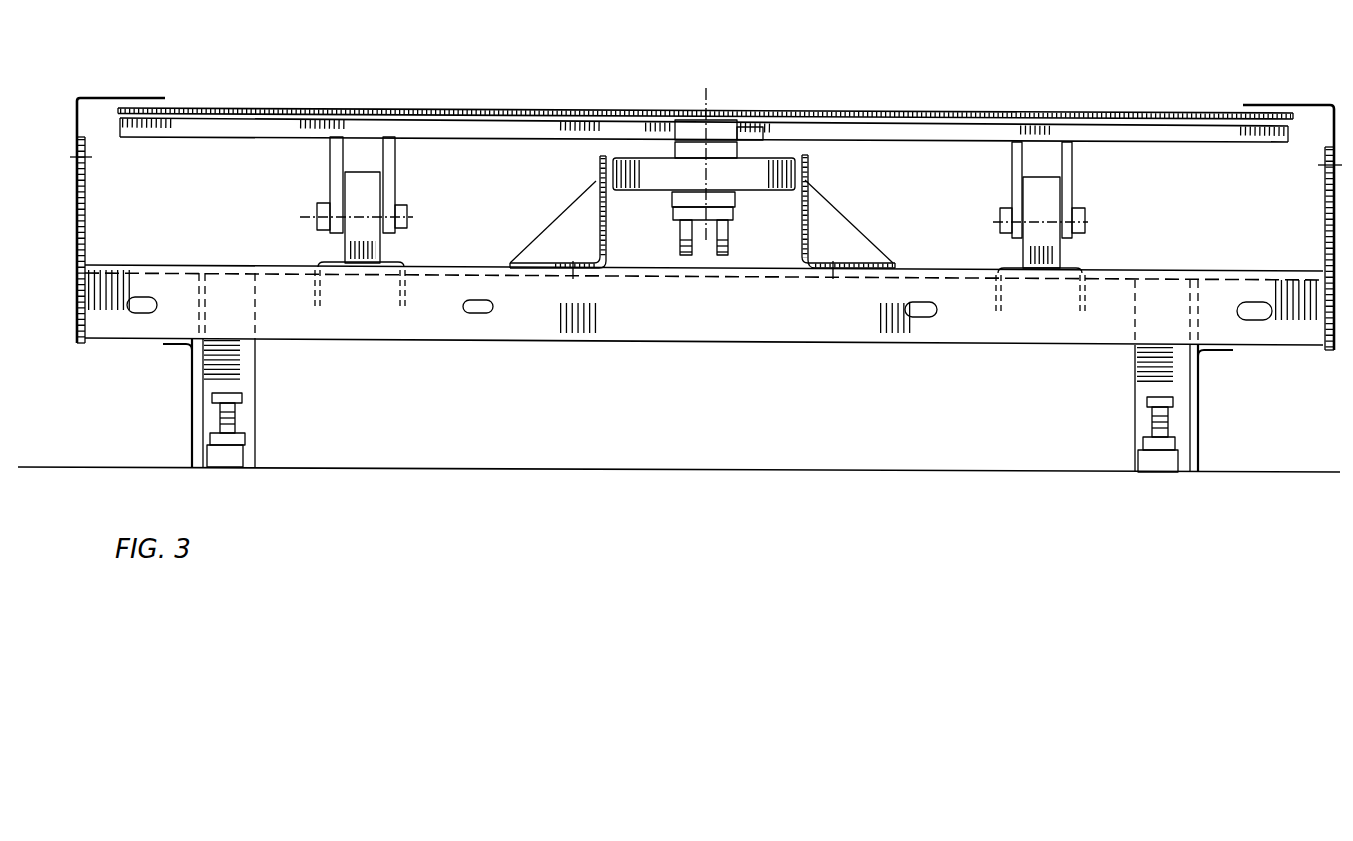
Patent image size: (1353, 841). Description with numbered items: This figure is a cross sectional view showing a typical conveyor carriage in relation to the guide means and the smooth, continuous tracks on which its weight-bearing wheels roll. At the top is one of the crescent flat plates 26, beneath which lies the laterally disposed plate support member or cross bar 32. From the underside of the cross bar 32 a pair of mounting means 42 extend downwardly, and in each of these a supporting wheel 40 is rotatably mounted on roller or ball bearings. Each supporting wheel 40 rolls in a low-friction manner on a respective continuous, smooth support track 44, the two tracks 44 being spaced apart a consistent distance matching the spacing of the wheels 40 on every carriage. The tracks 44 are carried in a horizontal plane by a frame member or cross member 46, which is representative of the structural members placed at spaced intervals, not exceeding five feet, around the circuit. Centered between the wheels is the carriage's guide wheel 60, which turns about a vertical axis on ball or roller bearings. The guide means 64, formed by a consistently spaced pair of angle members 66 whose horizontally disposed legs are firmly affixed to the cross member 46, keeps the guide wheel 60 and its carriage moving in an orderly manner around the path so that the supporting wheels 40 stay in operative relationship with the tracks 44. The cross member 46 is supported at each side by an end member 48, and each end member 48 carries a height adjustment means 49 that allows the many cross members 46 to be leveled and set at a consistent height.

The crescent flat plate 26 is at (330, 108).
The plate support member or cross bar 32 is at (905, 133).
The supporting wheel 40 is at (355, 252).
The mounting means 42 is at (395, 165).
The support track 44 is at (396, 263).
The frame member 46 is at (885, 335).
The end member 48 is at (238, 368).
The height adjustment means 49 is at (220, 415).
The guide wheel 60 is at (757, 165).
The guide means 64 is at (667, 93).
The angle member 66 is at (592, 182).